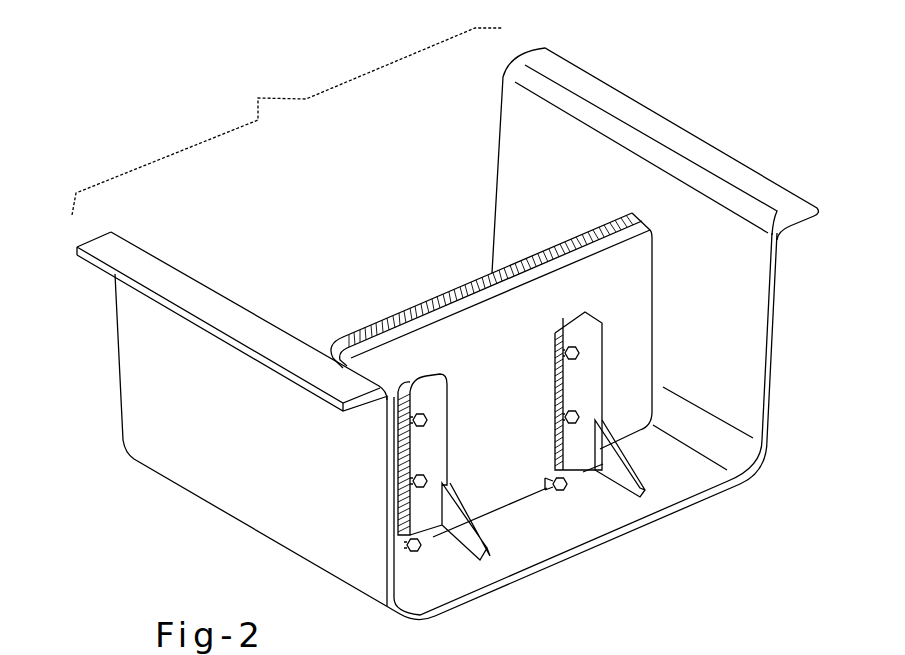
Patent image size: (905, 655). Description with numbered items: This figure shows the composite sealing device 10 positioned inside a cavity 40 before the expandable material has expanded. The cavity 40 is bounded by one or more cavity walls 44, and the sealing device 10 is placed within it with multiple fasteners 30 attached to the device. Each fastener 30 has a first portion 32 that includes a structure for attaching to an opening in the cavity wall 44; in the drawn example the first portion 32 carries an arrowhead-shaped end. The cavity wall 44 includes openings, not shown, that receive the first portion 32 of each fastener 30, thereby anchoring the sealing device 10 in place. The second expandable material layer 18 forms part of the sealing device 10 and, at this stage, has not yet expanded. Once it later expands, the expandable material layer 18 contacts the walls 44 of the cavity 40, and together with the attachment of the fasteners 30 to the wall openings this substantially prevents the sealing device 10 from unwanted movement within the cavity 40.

The sealing device 10 is at (398, 306).
The second expandable material layer 18 is at (483, 283).
The fastener 30 is at (437, 436).
The first portion 32 is at (450, 527).
The cavity 40 is at (287, 121).
The cavity wall 44 is at (714, 331).